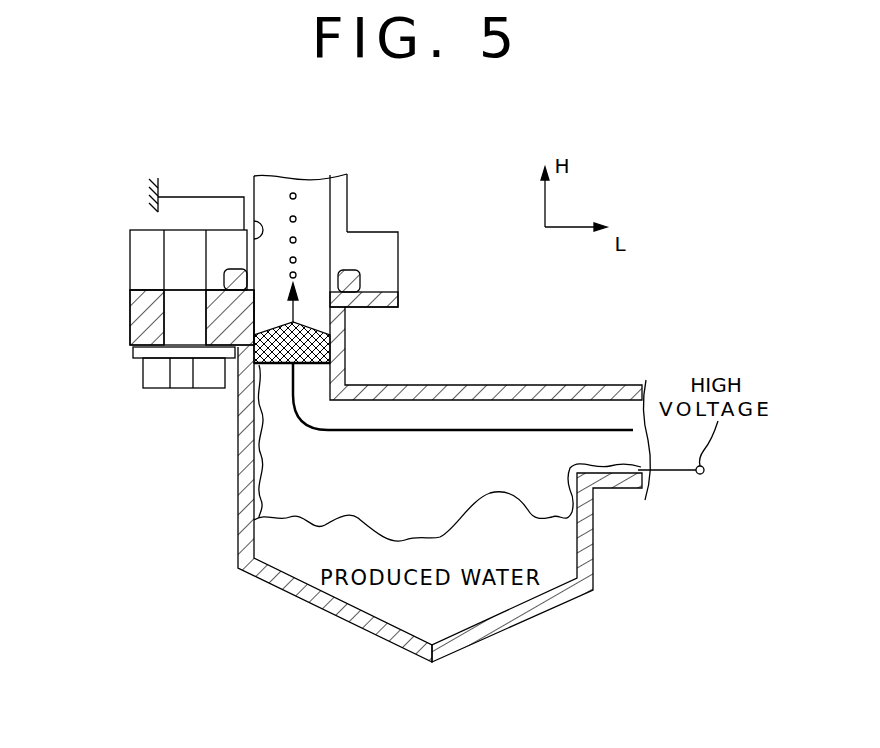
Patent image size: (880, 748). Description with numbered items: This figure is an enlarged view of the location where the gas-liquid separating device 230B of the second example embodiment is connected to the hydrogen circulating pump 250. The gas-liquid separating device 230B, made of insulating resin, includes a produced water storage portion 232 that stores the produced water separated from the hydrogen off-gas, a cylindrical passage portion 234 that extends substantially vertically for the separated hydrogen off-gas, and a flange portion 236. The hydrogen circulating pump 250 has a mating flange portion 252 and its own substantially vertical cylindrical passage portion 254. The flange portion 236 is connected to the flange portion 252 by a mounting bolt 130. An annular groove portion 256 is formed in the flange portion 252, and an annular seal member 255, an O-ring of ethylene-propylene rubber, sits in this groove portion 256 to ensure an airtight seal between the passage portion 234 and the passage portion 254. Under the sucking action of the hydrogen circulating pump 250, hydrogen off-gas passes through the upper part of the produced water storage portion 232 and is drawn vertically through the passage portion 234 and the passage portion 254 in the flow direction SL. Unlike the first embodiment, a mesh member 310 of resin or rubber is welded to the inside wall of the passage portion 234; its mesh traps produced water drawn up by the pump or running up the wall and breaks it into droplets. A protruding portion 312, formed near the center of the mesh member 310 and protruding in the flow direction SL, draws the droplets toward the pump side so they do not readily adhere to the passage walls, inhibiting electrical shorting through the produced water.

The hydrogen circulating pump 250 is at (406, 221).
The cylindrical passage portion 254 is at (254, 215).
The flange portion 252 is at (129, 264).
The flange portion 236 is at (129, 320).
The annular groove portion 256 is at (224, 268).
The seal member 255 is at (246, 288).
The mounting bolt 130 is at (182, 390).
The cylindrical passage portion 234 is at (260, 442).
The produced water storage portion 232 is at (506, 636).
The gas-liquid separating device 230B is at (529, 349).
The protruding portion 312 is at (303, 320).
The mesh member 310 is at (272, 365).
The flow direction SL is at (412, 433).